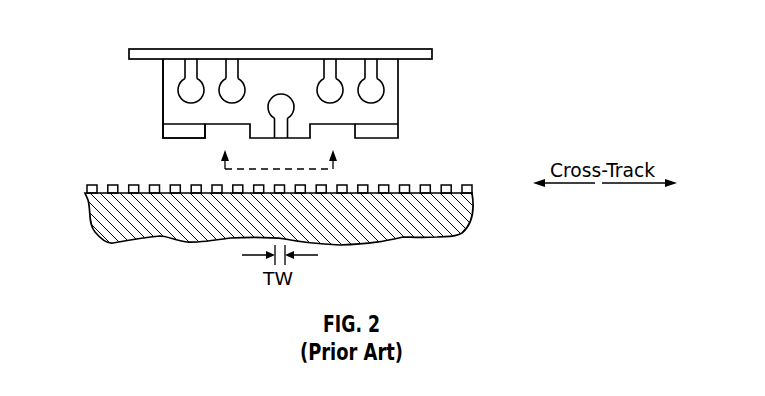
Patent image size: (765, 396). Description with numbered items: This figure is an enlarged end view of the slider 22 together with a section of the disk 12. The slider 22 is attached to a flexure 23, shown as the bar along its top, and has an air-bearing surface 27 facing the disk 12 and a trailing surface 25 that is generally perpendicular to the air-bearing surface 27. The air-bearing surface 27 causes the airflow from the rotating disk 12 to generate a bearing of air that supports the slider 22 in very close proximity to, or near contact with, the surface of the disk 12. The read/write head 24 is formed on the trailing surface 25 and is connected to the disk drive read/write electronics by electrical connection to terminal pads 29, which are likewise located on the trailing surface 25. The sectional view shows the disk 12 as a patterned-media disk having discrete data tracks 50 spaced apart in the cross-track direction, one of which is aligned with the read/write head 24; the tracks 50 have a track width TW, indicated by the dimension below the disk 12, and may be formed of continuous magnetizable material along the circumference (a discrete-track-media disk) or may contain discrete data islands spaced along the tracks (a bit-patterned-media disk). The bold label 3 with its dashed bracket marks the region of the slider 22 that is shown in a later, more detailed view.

The disk 12 is at (460, 218).
The slider 22 is at (399, 114).
The flexure 23 is at (423, 50).
The read/write head 24 is at (280, 94).
The trailing surface 25 is at (173, 114).
The air-bearing surface 27 is at (184, 139).
The terminal pads 29 is at (219, 90).
The discrete data tracks 50 is at (112, 185).
The section line for FIG. 3 is at (282, 149).